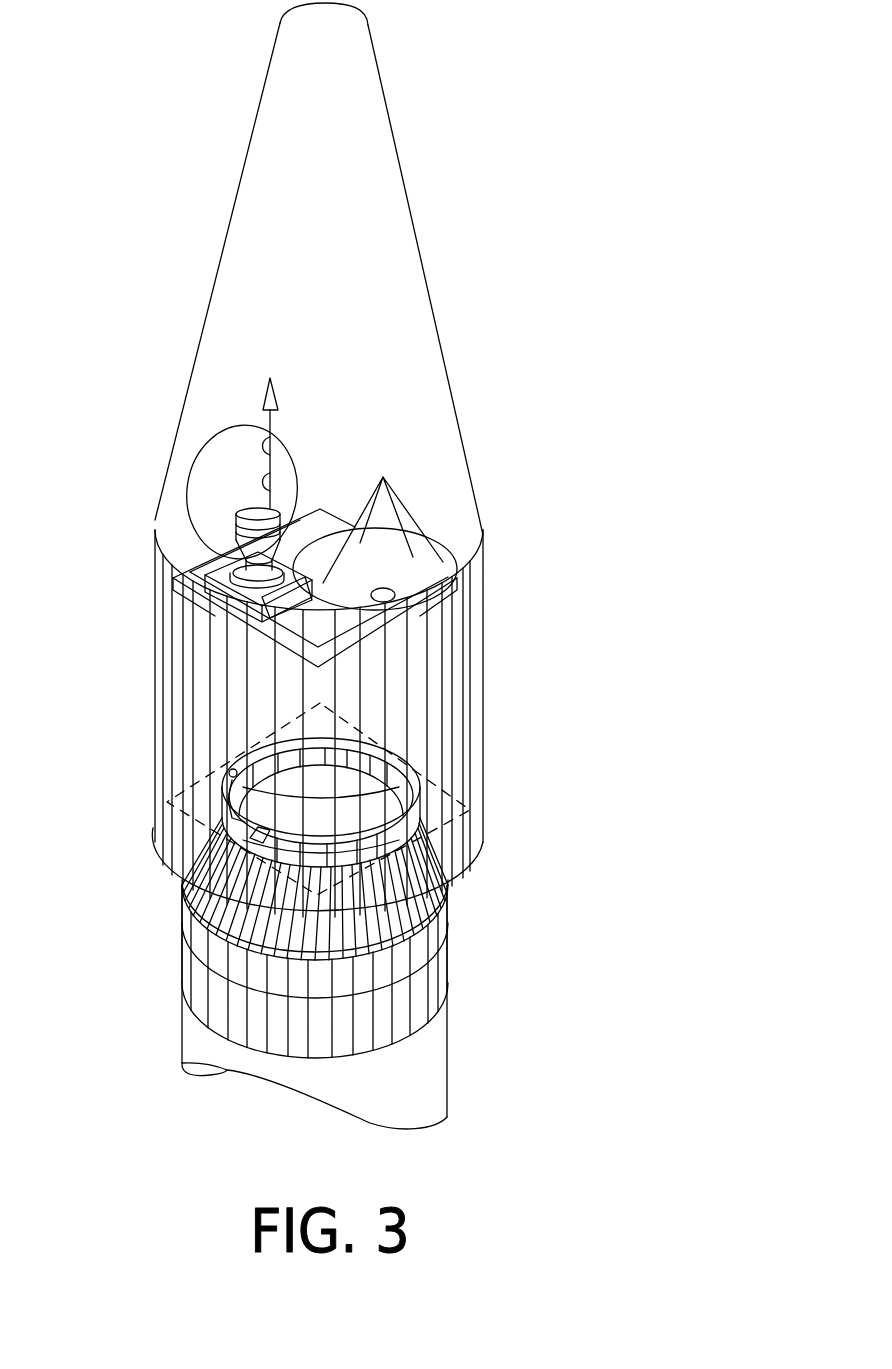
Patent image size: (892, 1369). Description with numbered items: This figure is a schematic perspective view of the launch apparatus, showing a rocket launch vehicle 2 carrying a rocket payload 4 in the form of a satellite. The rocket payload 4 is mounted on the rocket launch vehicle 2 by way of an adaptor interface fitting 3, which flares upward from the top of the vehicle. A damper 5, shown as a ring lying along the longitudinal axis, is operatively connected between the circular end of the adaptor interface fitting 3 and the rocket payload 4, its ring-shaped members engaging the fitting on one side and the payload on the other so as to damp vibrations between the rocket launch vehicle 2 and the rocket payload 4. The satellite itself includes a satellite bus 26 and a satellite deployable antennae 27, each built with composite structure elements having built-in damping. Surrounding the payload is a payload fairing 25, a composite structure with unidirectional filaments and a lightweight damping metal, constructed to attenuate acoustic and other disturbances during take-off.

The rocket launch vehicle 2 is at (478, 1062).
The adaptor interface fitting 3 is at (483, 847).
The rocket payload 4 is at (457, 290).
The damper 5 is at (405, 782).
The payload fairing 25 is at (481, 657).
The satellite bus 26 is at (157, 527).
The satellite deployable antennae 27 is at (413, 557).